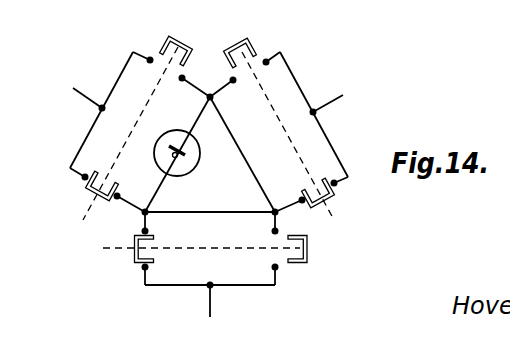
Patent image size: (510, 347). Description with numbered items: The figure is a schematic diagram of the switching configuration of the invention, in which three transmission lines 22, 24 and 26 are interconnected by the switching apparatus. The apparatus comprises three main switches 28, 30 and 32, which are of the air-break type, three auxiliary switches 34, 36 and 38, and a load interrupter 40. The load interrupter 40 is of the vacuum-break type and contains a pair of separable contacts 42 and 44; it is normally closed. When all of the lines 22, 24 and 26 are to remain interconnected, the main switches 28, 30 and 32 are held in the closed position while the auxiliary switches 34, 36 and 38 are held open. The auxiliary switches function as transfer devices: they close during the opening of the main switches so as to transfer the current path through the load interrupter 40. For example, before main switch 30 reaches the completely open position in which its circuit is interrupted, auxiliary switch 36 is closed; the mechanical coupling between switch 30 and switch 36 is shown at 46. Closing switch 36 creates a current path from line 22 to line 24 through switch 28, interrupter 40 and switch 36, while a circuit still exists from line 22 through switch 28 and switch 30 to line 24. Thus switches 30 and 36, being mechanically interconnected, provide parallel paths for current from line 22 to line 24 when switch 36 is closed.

The transmission line 22 is at (86, 90).
The transmission line 24 is at (211, 302).
The transmission line 26 is at (331, 100).
The main switch 28 is at (88, 187).
The main switch 30 is at (135, 254).
The main switch 32 is at (333, 197).
The auxiliary switch 34 is at (180, 42).
The auxiliary switch 36 is at (307, 258).
The auxiliary switch 38 is at (242, 42).
The load interrupter 40 is at (184, 175).
The separable contact 42 is at (180, 130).
The separable contact 44 is at (172, 157).
The mechanical coupling 46 is at (205, 248).